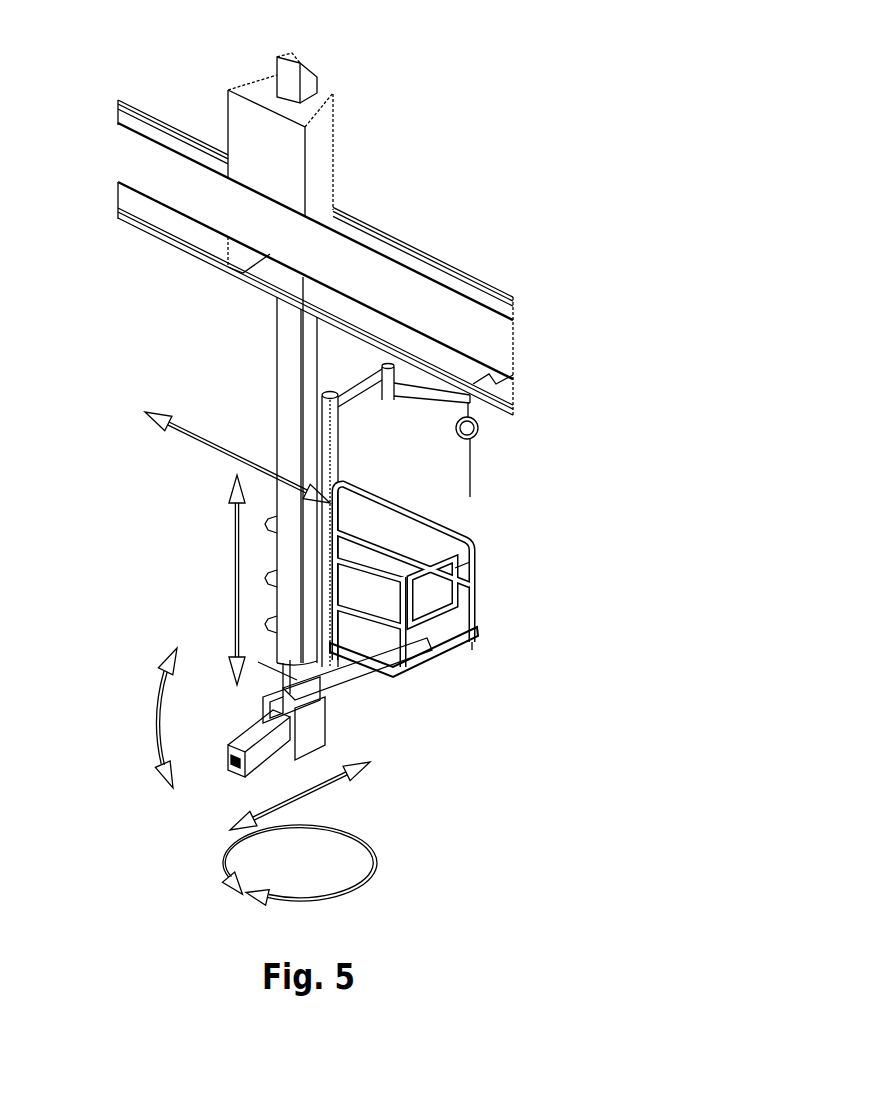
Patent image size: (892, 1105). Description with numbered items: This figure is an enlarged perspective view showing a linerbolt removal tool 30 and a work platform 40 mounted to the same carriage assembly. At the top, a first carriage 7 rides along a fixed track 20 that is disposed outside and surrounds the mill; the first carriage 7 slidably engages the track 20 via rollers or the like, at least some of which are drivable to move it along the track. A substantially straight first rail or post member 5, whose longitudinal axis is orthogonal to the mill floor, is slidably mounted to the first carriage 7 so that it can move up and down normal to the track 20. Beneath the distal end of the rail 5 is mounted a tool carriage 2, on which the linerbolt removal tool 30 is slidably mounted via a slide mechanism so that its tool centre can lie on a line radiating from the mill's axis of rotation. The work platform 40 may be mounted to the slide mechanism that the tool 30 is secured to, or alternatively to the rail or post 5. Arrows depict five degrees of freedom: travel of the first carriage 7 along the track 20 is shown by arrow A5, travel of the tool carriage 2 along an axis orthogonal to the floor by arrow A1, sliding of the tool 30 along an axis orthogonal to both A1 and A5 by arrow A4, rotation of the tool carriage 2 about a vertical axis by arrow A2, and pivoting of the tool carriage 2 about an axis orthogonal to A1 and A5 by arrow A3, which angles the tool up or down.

The first carriage 7 is at (292, 163).
The fixed track 20 is at (480, 340).
The first rail or post member 5 is at (285, 307).
The work platform 40 is at (453, 622).
The tool carriage 2 is at (313, 685).
The linerbolt removal tool 30 is at (230, 770).
The arrow A1 is at (233, 550).
The arrow A2 is at (225, 873).
The arrow A3 is at (162, 720).
The arrow A4 is at (348, 777).
The arrow A5 is at (197, 440).